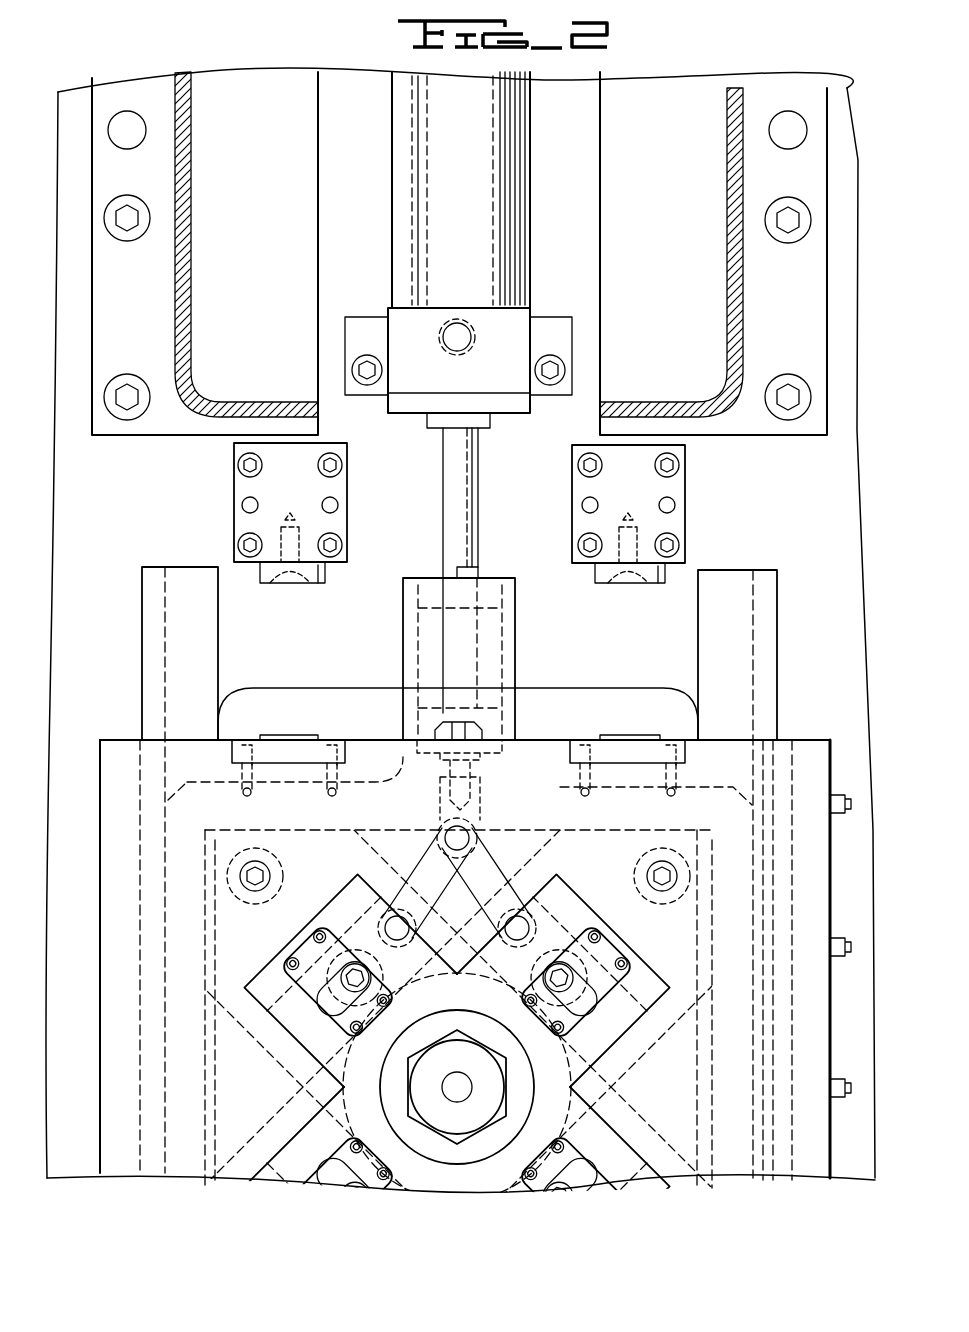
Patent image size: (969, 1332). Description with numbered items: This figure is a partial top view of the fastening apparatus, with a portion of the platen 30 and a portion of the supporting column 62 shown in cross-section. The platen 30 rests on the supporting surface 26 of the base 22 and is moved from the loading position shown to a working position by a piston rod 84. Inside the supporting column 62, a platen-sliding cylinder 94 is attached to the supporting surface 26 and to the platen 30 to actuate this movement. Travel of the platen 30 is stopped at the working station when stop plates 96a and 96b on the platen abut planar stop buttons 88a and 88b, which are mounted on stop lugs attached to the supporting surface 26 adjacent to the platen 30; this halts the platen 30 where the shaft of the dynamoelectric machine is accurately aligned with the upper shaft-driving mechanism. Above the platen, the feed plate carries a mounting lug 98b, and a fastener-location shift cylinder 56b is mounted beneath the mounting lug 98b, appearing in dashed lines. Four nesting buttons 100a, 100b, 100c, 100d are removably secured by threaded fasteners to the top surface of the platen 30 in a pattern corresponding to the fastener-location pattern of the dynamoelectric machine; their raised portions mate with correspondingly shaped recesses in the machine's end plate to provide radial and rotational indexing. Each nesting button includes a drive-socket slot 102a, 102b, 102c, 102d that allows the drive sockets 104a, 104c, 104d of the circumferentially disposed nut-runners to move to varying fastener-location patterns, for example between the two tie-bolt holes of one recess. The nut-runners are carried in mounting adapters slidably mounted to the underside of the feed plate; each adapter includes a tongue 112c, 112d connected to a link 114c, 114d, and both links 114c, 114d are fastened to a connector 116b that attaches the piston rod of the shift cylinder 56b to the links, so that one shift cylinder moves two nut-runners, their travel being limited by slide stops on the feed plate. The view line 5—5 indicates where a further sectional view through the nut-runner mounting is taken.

The base 22 is at (858, 145).
The supporting surface 26 is at (82, 105).
The platen 30 is at (122, 740).
The fastener-location shift cylinder 56b is at (436, 736).
The supporting column 62 is at (745, 100).
The piston rod 84 is at (468, 488).
The planar stop button 88a is at (290, 580).
The planar stop button 88b is at (630, 583).
The platen-sliding cylinder 94 is at (515, 188).
The stop plate 96a is at (292, 738).
The stop plate 96b is at (627, 740).
The mounting lug 98b is at (518, 591).
The nesting button 100a is at (300, 1172).
The nesting button 100b is at (628, 1182).
The nesting button 100c is at (582, 985).
The nesting button 100d is at (310, 980).
The drive-socket slot 102a is at (335, 1168).
The drive-socket slot 102b is at (580, 1175).
The drive-socket slot 102c is at (605, 1000).
The drive-socket slot 102d is at (300, 1000).
The drive socket 104a is at (380, 1176).
The drive socket 104c is at (648, 866).
The drive socket 104d is at (272, 866).
The tongue 112c is at (518, 912).
The tongue 112d is at (400, 915).
The link 114c is at (490, 865).
The link 114d is at (428, 860).
The connector 116b is at (478, 812).
The view line 5— 5 is at (482, 568).